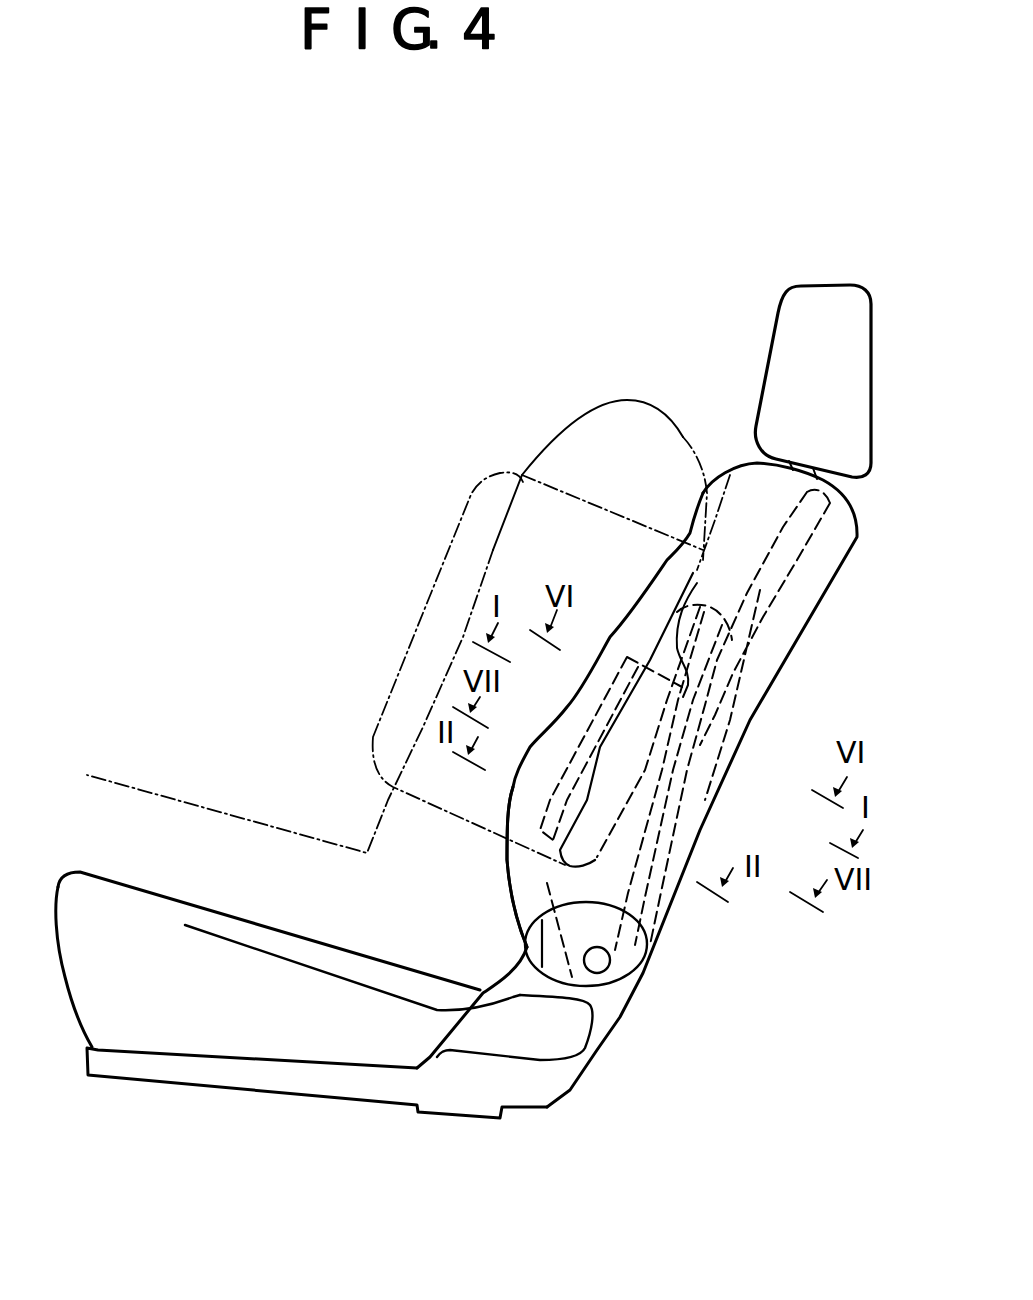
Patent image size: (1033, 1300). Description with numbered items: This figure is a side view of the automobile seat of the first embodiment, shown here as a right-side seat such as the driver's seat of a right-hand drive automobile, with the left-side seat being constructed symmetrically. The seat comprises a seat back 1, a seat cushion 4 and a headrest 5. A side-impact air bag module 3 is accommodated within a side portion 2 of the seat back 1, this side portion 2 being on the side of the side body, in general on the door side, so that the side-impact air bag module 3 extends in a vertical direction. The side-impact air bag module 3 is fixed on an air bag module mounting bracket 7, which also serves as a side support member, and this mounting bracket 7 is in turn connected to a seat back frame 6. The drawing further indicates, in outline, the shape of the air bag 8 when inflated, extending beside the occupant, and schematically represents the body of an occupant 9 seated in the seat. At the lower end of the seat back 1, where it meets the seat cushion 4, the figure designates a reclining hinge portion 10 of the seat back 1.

The seat back 1 is at (783, 637).
The side portion 2 is at (525, 812).
The side-impact air bag module 3 is at (658, 713).
The seat cushion 4 is at (258, 1025).
The headrest 5 is at (788, 327).
The seat back frame 6 is at (787, 553).
The air bag module mounting bracket 7 is at (613, 960).
The shape of air bag when inflated 8 is at (453, 542).
The body of an occupant 9 is at (593, 410).
The reclining hinge portion 10 is at (597, 962).